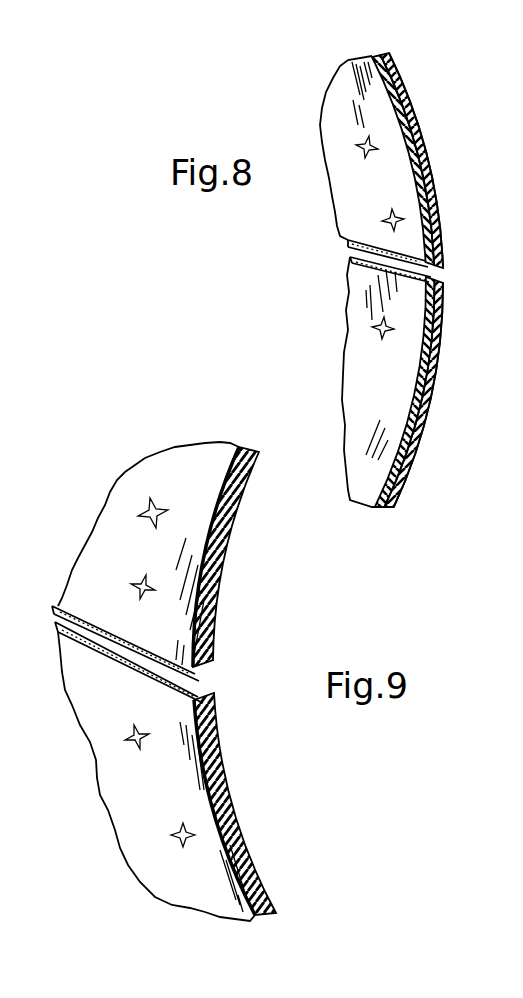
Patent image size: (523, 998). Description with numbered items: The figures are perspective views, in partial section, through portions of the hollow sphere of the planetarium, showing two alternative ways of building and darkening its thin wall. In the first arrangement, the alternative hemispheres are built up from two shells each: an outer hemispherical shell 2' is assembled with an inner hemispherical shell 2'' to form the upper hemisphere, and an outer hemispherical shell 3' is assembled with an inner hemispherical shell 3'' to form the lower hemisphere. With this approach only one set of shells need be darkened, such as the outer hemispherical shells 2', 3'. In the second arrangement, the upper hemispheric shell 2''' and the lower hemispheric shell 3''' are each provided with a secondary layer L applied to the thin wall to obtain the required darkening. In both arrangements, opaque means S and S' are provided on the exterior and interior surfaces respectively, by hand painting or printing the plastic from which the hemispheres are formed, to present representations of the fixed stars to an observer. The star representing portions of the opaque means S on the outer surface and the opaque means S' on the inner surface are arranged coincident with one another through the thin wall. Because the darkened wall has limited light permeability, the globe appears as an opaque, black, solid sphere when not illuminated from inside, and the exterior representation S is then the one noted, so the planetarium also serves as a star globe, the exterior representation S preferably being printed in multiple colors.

In FIG. 8, the outer hemispherical shell 2' is at (407, 147).
In FIG. 8, the inner hemispherical shell 2'' is at (374, 139).
In FIG. 9, the upper hemispheric shell 2''' is at (250, 557).
In FIG. 8, the outer hemispherical shell 3' is at (409, 415).
In FIG. 8, the inner hemispherical shell 3'' is at (384, 405).
In FIG. 9, the lower hemispheric shell 3''' is at (241, 804).
In FIG. 8, the opaque means S is at (437, 280).
In FIG. 8, the opaque means S' is at (359, 243).
In FIG. 9, the opaque means S' is at (113, 674).
In FIG. 9, the secondary layer L is at (238, 446).